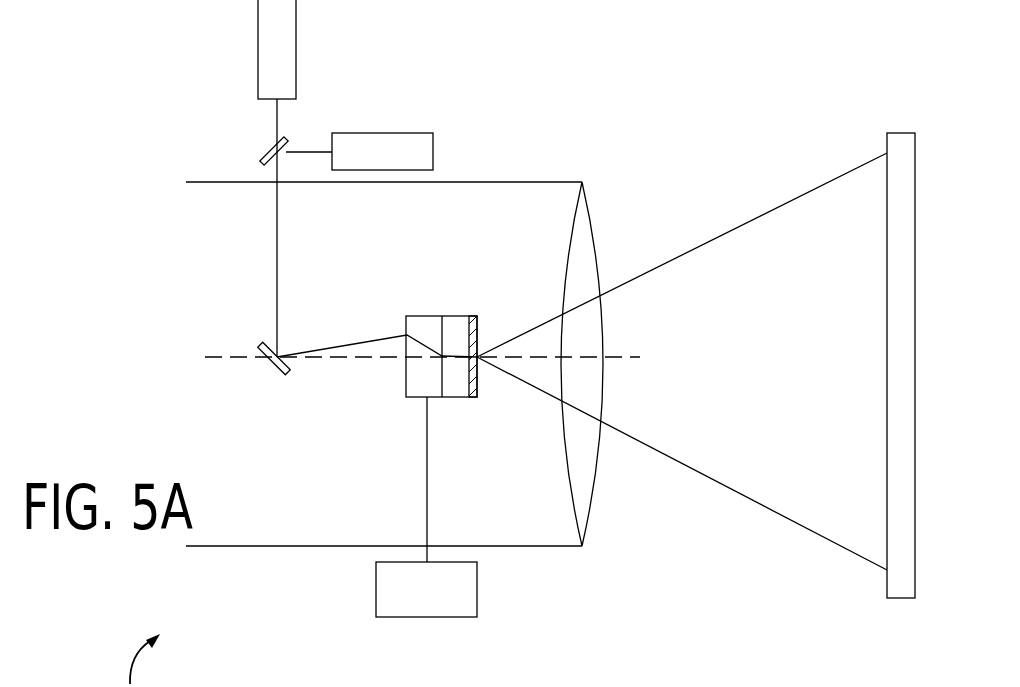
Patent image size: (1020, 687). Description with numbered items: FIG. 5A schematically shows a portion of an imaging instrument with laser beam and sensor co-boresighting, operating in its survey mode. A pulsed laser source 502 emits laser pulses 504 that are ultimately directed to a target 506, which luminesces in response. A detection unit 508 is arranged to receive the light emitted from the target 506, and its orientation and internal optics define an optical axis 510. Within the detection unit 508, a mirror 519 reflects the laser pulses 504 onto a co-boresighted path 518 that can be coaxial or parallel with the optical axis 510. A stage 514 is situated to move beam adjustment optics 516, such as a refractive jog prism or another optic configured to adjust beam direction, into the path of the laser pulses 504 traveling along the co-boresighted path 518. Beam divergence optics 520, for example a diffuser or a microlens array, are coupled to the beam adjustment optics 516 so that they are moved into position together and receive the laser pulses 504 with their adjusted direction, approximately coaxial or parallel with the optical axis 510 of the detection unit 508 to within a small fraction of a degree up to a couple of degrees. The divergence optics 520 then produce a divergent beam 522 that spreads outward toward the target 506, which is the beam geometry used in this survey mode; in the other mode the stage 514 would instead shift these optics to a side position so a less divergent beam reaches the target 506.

The pulsed laser source 502 is at (359, 85).
The laser pulses 504 is at (277, 223).
The target 506 is at (887, 504).
The detection unit 508 is at (219, 460).
The optical axis 510 is at (357, 360).
The stage 514 is at (426, 507).
The beam adjustment optics 516 is at (442, 315).
The co-boresighted path 518 is at (353, 343).
The mirror 519 is at (270, 372).
The beam divergence optics 520 is at (477, 330).
The divergent beam 522 is at (782, 260).